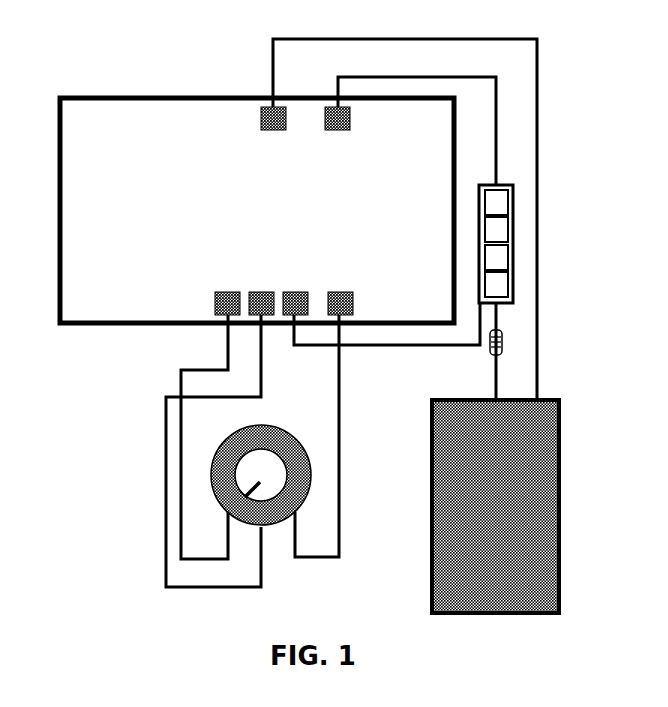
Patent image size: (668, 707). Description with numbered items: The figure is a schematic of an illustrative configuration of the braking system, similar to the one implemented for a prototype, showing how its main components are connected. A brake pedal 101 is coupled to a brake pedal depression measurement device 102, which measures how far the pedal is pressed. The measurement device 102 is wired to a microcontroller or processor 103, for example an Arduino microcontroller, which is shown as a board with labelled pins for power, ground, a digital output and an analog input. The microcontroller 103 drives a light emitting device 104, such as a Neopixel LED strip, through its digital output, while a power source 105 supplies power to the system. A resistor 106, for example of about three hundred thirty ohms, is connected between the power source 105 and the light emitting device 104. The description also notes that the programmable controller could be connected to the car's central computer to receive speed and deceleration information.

The brake pedal 101 is at (189, 457).
The brake pedal depression measurement device 102 is at (297, 414).
The microcontroller or processor 103 is at (209, 81).
The light emitting device 104 is at (530, 233).
The power source 105 is at (408, 510).
The resistor 106 is at (463, 364).